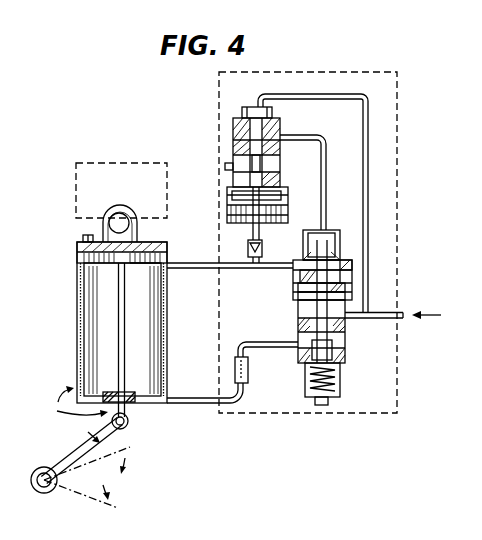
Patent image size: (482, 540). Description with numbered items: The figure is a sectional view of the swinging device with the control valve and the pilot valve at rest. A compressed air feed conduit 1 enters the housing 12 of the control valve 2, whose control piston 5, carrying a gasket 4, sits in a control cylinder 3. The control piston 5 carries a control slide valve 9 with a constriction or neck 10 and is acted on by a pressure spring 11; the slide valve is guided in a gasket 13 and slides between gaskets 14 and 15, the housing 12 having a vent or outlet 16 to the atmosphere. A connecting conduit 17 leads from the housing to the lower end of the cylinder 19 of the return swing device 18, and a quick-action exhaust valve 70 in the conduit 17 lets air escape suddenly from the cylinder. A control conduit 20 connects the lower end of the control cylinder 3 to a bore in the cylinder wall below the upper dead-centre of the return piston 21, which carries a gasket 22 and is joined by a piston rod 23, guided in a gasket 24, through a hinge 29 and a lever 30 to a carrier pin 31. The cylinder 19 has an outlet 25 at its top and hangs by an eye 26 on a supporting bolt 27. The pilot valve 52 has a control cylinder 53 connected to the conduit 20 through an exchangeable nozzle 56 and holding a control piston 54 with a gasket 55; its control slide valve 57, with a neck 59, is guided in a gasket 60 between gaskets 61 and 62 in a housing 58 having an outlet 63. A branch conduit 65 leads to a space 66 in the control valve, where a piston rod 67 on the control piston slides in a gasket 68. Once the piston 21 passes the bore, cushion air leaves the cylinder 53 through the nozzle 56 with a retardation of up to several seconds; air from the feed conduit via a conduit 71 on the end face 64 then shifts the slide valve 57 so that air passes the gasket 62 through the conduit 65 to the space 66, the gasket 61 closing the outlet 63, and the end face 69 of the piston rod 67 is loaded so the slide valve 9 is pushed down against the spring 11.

The compressed air feed conduit 1 is at (402, 312).
The control valve 2 is at (288, 305).
The control cylinder 3 is at (346, 264).
The gasket 4 is at (322, 278).
The control piston 5 is at (332, 290).
The control slide valve 9 is at (338, 350).
The constriction or neck 10 is at (298, 322).
The pressure spring 11 is at (305, 385).
The housing 12 is at (345, 327).
The gasket 13 is at (340, 305).
The gasket 14 is at (298, 333).
The gasket 15 is at (343, 357).
The vent or outlet 16 is at (328, 402).
The connecting conduit 17 is at (204, 403).
The return swing device 18 is at (74, 402).
The cylinder 19 is at (78, 321).
The control conduit 20 is at (185, 263).
The return piston 21 is at (135, 264).
The gasket 22 is at (80, 262).
The piston rod 23 is at (122, 336).
The gasket 24 is at (130, 397).
The outlet 25 is at (84, 237).
The eye 26 is at (136, 232).
The supporting bolt 27 is at (114, 217).
The hinge 29 is at (128, 421).
The lever 30 is at (72, 452).
The carrier pin 31 is at (47, 492).
The pilot valve 52 is at (226, 177).
The control cylinder 53 is at (227, 211).
The control piston 54 is at (262, 205).
The gasket 55 is at (288, 196).
The exchangeable nozzle 56 is at (248, 248).
The control slide valve 57 is at (268, 172).
The housing 58 is at (233, 135).
The constriction or neck 59 is at (280, 156).
The gasket 60 is at (280, 185).
The gasket 61 is at (233, 152).
The gasket 62 is at (273, 123).
The outlet 63 is at (225, 166).
The end face 64 is at (255, 105).
The branch conduit 65 is at (326, 158).
The space 66 is at (327, 229).
The piston rod 67 is at (342, 269).
The gasket 68 is at (305, 261).
The end face 69 is at (308, 247).
The quick-action exhaust valve 70 is at (248, 364).
The conduit 71 is at (369, 151).